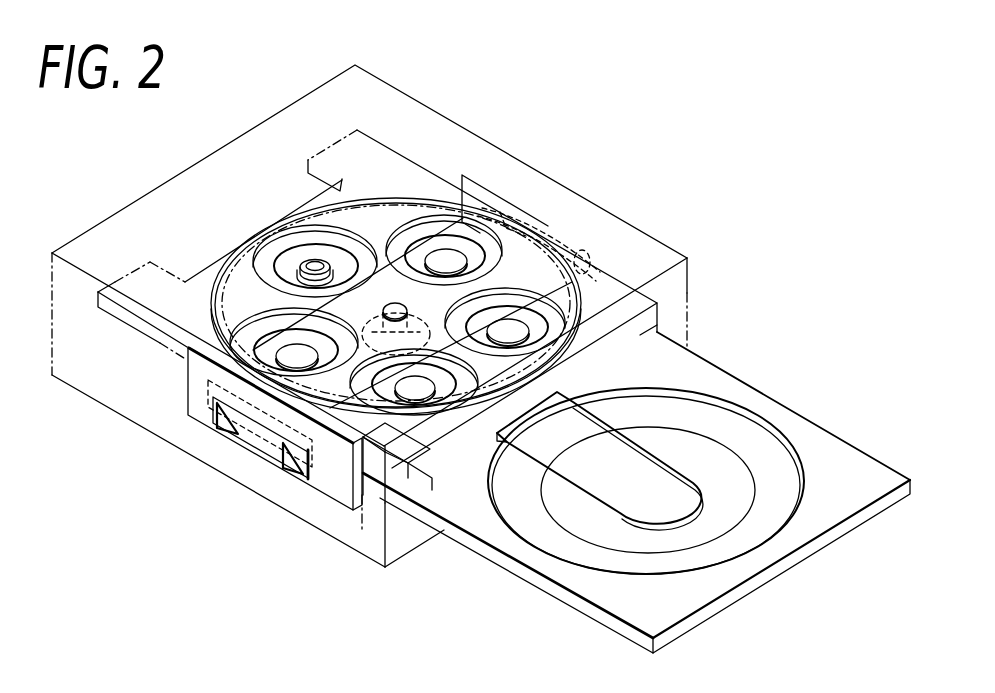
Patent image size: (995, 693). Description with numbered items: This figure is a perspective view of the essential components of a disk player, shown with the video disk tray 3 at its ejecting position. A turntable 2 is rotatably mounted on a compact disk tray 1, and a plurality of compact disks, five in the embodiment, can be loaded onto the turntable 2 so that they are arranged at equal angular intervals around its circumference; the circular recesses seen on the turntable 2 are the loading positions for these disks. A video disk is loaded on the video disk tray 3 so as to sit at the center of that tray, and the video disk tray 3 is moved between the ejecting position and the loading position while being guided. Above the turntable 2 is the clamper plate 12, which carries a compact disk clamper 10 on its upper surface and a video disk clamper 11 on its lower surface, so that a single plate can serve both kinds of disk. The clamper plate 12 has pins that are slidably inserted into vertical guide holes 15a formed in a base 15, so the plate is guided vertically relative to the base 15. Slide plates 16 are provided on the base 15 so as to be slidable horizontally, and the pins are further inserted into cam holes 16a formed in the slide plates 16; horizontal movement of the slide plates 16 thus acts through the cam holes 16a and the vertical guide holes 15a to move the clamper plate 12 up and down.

The compact disk tray 1 is at (378, 158).
The turntable 2 is at (397, 212).
The video disk tray 3 is at (718, 385).
The compact disk clamper 10 is at (315, 264).
The video disk clamper 11 is at (400, 324).
The clamper plate 12 is at (253, 350).
The base 15 is at (197, 418).
The vertical guide holes 15a is at (210, 433).
The slide plates 16 is at (263, 448).
The cam holes 16a is at (300, 474).